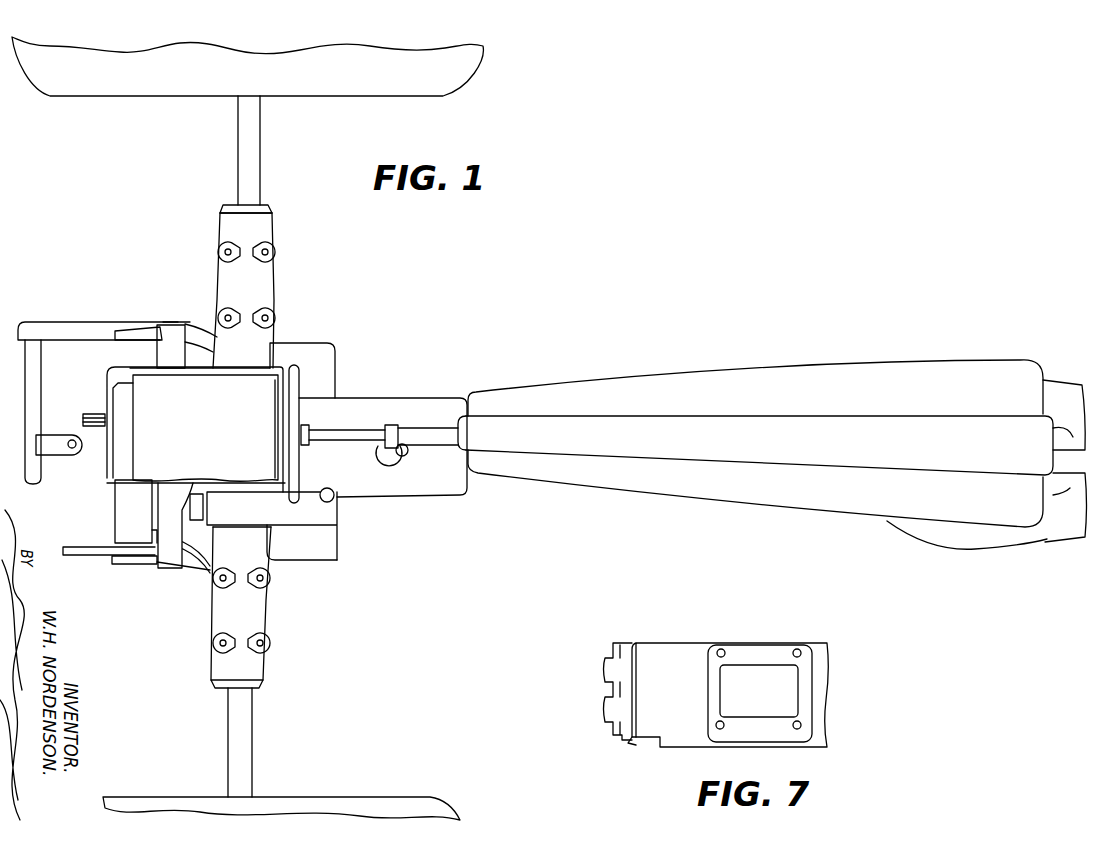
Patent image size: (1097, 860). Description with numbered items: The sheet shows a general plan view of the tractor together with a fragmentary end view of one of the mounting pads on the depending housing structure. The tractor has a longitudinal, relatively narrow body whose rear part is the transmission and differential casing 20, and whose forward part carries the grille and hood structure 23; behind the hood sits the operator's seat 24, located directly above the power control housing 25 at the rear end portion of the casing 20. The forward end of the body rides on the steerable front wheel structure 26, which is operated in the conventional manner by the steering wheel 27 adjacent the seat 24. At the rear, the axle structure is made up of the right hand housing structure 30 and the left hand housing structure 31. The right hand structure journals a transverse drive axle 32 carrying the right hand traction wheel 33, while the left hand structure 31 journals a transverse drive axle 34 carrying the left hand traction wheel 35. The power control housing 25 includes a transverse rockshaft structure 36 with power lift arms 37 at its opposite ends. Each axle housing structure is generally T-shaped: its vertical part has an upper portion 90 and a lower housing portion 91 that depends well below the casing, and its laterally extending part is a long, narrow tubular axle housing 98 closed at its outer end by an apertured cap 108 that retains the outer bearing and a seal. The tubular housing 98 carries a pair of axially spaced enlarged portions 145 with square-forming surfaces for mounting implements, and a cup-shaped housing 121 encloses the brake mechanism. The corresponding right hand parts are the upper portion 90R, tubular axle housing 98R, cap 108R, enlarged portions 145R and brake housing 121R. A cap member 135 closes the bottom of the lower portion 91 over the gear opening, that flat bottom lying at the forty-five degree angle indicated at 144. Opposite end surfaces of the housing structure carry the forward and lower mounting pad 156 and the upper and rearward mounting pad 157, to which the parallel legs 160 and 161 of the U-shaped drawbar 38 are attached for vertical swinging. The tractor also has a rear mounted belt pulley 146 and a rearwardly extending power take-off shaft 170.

In FIG. 1, the rear transmission and differential casing 20 is at (463, 390).
In FIG. 1, the grille and hood structure 23 is at (863, 372).
In FIG. 1, the operator's seat 24 is at (200, 448).
In FIG. 1, the power control housing 25 is at (147, 491).
In FIG. 1, the steerable front wheel structure 26 is at (1045, 540).
In FIG. 1, the steering wheel 27 is at (303, 373).
In FIG. 1, the right hand housing structure 30 is at (256, 617).
In FIG. 1, the left hand housing structure 31 is at (275, 276).
In FIG. 7, the left hand housing structure 31 is at (690, 641).
In FIG. 1, the transverse drive axle 32 is at (250, 733).
In FIG. 1, the right hand traction wheel 33 is at (365, 797).
In FIG. 1, the transverse drive axle 34 is at (240, 152).
In FIG. 1, the left hand traction wheel 35 is at (170, 96).
In FIG. 1, the transverse rockshaft structure 36 is at (181, 322).
In FIG. 1, the power lift arms 37 is at (138, 328).
In FIG. 1, the drawbar 38 is at (60, 329).
In FIG. 1, the upper portion 90 is at (336, 386).
In FIG. 1, the upper portion 90R is at (338, 516).
In FIG. 7, the lower housing portion 91 is at (664, 650).
In FIG. 1, the tubular axle housing 98 is at (272, 225).
In FIG. 1, the tubular axle housing 98R is at (220, 612).
In FIG. 1, the apertured cap 108 is at (268, 206).
In FIG. 1, the apertured cap 108R is at (262, 687).
In FIG. 1, the cup-shaped housing 121 is at (328, 348).
In FIG. 1, the cup-shaped housing 121R is at (338, 548).
In FIG. 7, the cap member 135 is at (612, 670).
In FIG. 7, the 45 degree angle 144 is at (633, 742).
In FIG. 1, the enlarged portions 145 is at (274, 278).
In FIG. 1, the enlarged portions 145R is at (270, 580).
In FIG. 1, the belt pulley 146 is at (118, 522).
In FIG. 1, the mounting pad 156 is at (205, 508).
In FIG. 7, the mounting pad 157 is at (775, 658).
In FIG. 1, the drawbar leg 160 is at (95, 322).
In FIG. 1, the drawbar leg 161 is at (97, 566).
In FIG. 1, the power take-off shaft 170 is at (93, 414).